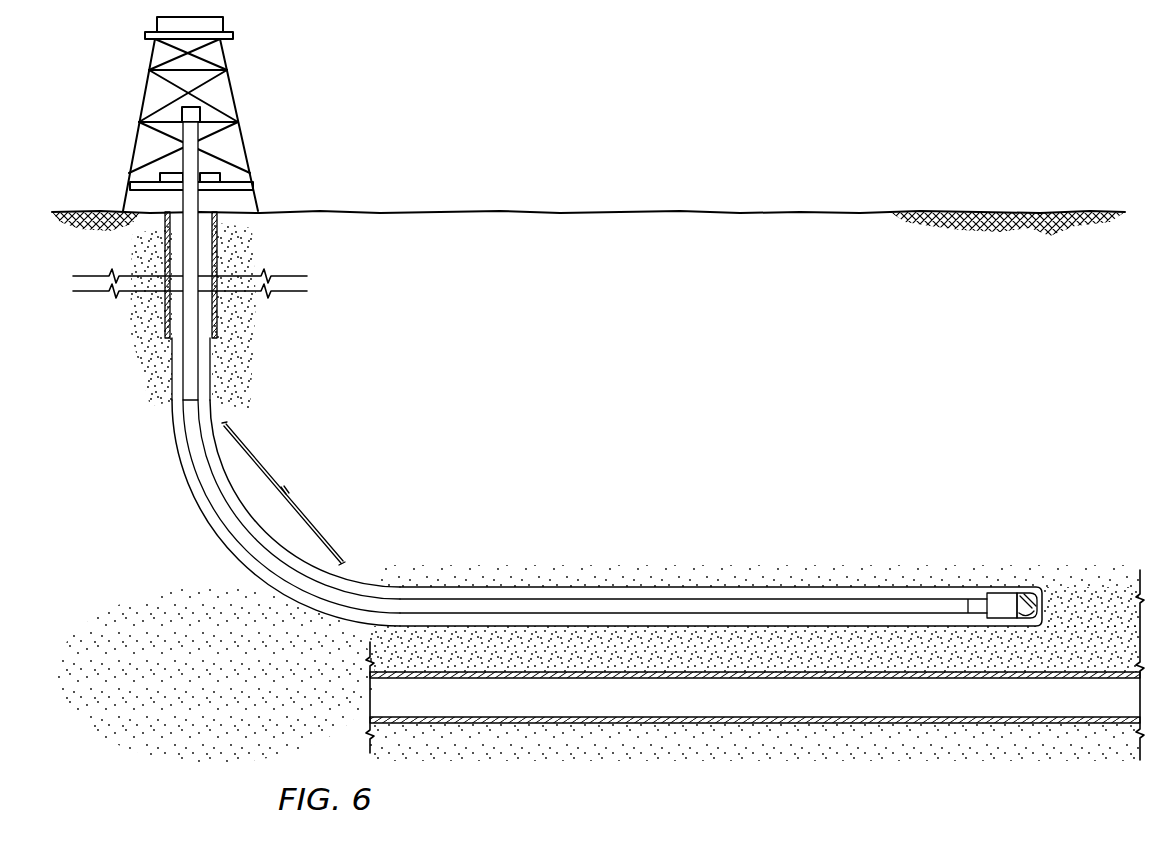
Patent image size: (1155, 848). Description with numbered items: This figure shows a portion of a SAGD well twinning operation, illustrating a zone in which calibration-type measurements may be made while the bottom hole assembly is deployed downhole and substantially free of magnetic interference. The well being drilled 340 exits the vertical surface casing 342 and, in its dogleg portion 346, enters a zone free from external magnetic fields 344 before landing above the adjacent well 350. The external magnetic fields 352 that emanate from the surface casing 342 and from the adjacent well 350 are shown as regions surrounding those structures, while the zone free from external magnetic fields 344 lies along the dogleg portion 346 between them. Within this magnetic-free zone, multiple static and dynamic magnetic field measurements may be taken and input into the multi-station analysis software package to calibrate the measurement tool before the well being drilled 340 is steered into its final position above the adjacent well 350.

The well being drilled 340 is at (647, 587).
The surface casing 342 is at (166, 257).
The zone free from external magnetic fields 344 is at (283, 493).
The dogleg portion 346 is at (203, 516).
The adjacent well 350 is at (503, 711).
The external magnetic fields 352 is at (265, 333).